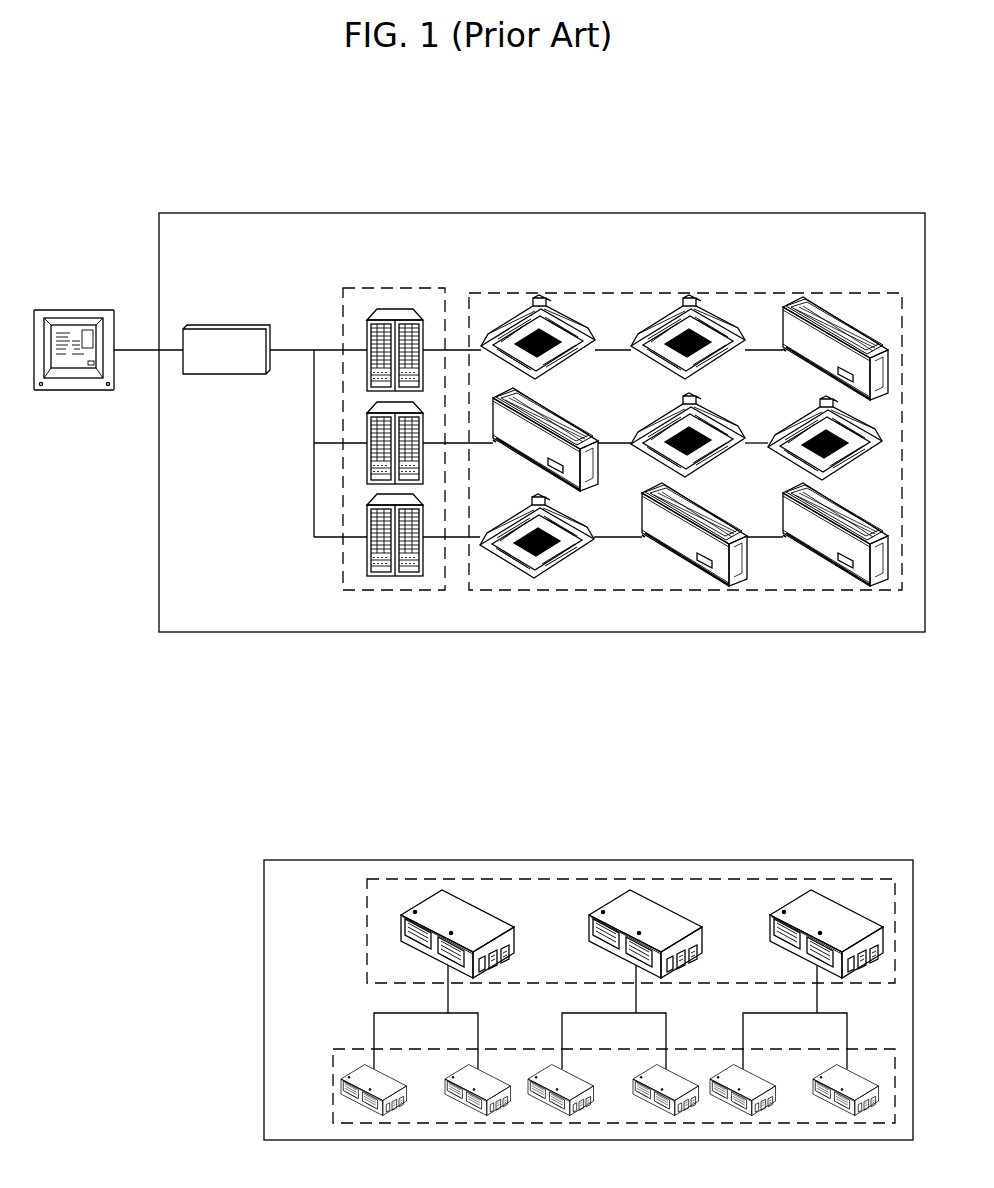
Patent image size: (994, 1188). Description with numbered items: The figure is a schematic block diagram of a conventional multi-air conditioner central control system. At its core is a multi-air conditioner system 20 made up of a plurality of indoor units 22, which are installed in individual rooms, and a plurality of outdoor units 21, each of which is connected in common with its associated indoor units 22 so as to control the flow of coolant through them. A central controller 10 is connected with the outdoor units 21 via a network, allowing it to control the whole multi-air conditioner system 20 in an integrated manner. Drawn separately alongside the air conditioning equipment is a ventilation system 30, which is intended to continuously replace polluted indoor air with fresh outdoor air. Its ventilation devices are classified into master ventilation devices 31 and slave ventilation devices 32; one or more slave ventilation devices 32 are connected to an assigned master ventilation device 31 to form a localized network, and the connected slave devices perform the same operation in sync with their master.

The central controller 10 is at (80, 310).
The multi-air conditioner system 20 is at (632, 212).
The outdoor units 21 is at (415, 288).
The indoor units 22 is at (728, 293).
The ventilation system 30 is at (742, 860).
The master ventilation devices 31 is at (367, 930).
The slave ventilation devices 32 is at (333, 1088).